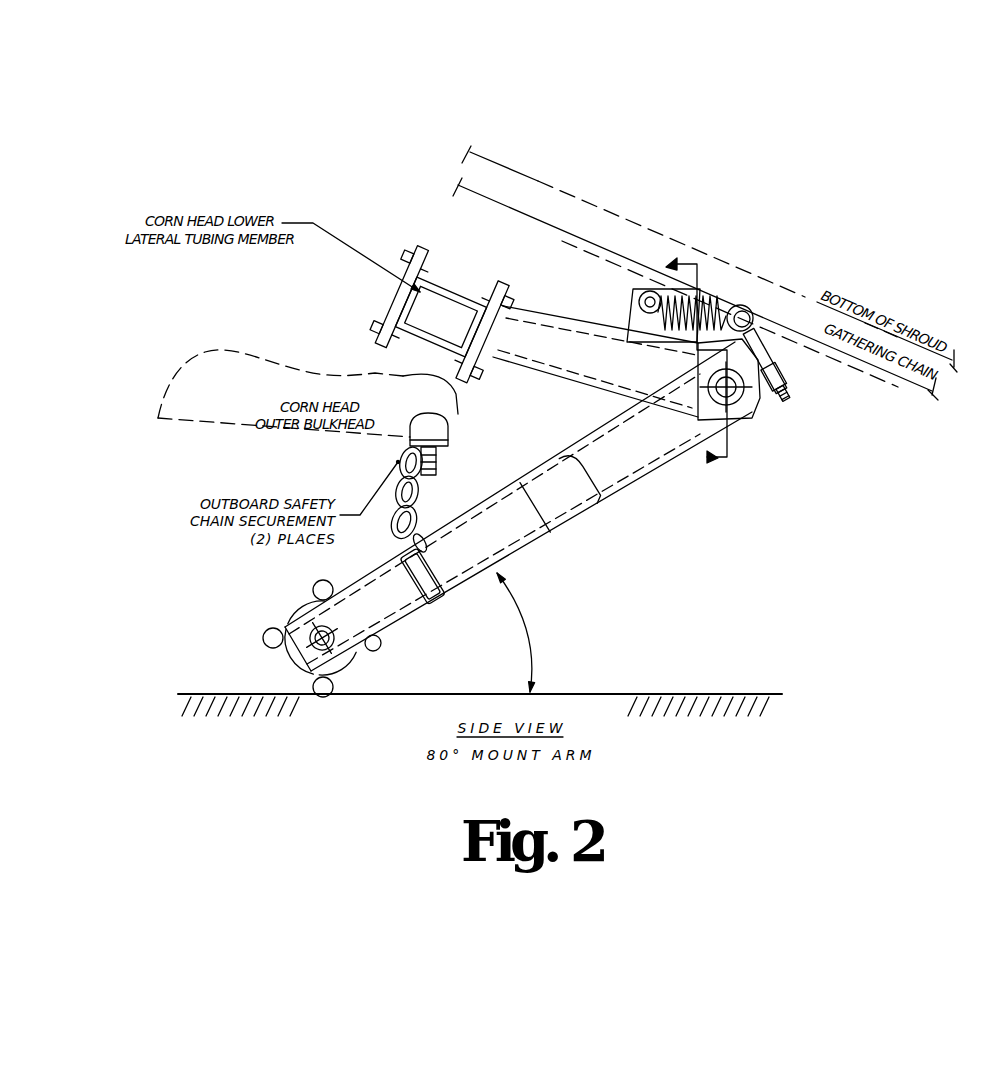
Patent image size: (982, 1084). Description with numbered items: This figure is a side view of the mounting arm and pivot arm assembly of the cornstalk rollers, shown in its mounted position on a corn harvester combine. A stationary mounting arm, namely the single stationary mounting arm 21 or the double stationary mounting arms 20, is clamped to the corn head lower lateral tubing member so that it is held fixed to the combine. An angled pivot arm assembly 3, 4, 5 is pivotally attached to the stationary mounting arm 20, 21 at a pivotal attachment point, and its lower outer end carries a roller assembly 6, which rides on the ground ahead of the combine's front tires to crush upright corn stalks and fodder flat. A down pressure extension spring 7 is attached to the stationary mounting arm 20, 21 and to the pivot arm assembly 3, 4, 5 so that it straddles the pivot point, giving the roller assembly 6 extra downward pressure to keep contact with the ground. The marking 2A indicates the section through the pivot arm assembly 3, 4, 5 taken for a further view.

The double stationary mounting arms 20 is at (626, 281).
The single stationary mounting arm 21 is at (571, 305).
The down pressure extension springs 7 is at (705, 305).
The section line 2A- 2A is at (686, 367).
The pivot arm assembly 3 is at (530, 517).
The central pivot arm assembly 4 is at (530, 517).
The pivot arm assembly 5 is at (622, 502).
The roller assemblies 6 is at (262, 628).